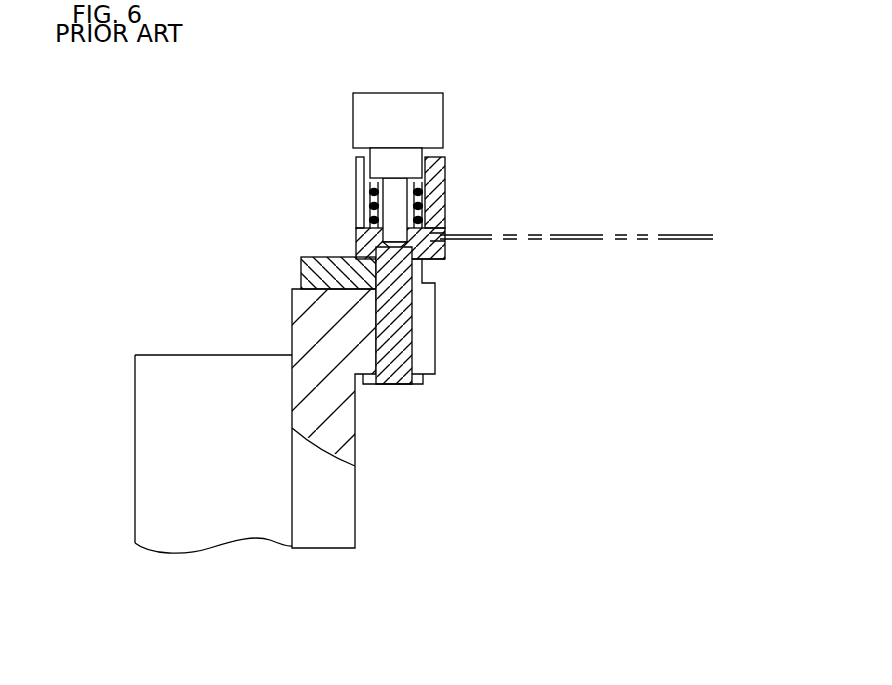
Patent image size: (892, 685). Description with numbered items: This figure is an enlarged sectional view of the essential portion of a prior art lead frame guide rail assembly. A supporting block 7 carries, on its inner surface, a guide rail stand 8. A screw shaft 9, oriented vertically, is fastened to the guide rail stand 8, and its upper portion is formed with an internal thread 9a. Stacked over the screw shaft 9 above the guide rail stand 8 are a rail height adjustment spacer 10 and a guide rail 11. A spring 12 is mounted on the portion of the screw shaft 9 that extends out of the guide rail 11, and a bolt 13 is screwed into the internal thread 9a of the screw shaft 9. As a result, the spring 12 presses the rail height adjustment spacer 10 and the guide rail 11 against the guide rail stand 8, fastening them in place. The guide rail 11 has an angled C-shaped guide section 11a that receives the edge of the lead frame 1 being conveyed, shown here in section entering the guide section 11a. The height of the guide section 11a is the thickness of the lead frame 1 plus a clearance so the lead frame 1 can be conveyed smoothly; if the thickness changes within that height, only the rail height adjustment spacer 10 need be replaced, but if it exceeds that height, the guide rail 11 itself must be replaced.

The lead frame 1 is at (588, 236).
The supporting block 7 is at (212, 536).
The guide rail stand 8 is at (328, 536).
The screw shaft 9 is at (412, 337).
The internal thread 9a is at (370, 192).
The rail height adjustment spacer 10 is at (303, 267).
The guide rail 11 is at (443, 167).
The guide section 11a is at (443, 230).
The spring 12 is at (370, 222).
The bolt 13 is at (396, 108).